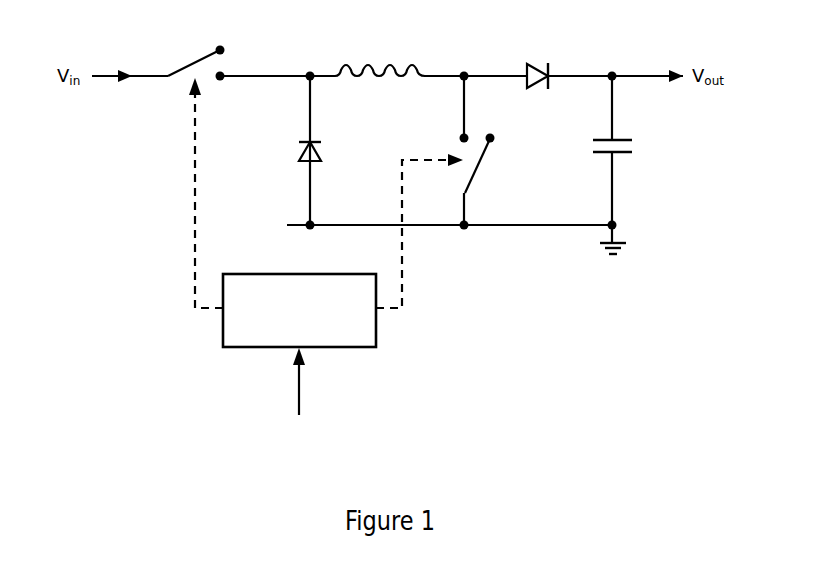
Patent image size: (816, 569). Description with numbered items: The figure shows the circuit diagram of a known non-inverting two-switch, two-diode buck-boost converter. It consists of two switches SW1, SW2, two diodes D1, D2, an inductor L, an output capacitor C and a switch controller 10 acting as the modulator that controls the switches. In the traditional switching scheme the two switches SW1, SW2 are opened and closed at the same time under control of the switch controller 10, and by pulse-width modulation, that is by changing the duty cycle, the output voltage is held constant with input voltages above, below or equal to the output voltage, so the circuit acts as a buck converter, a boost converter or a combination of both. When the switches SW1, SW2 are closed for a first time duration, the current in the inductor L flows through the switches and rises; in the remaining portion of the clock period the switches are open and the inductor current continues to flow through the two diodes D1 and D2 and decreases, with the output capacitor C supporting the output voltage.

The switch controller 10 is at (223, 330).
The first switch SW1 is at (200, 46).
The second switch SW2 is at (497, 150).
The inductor L is at (380, 54).
The output capacitor C is at (627, 150).
The first diode D1 is at (294, 150).
The second diode D2 is at (538, 59).